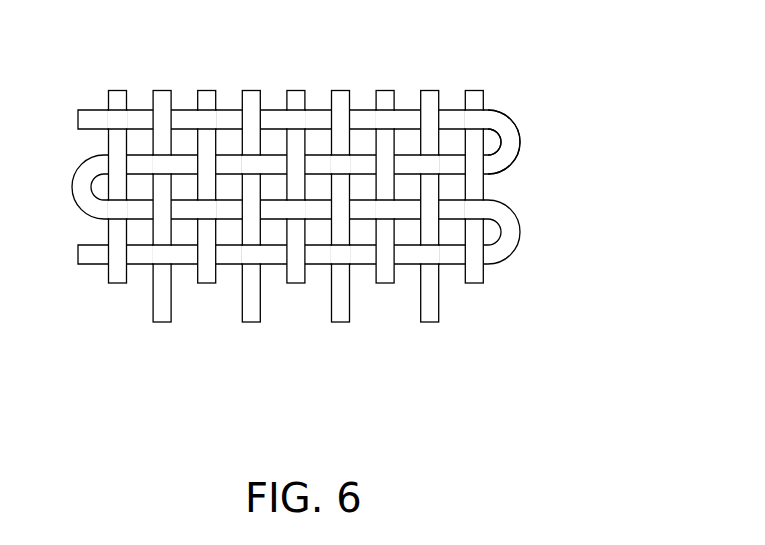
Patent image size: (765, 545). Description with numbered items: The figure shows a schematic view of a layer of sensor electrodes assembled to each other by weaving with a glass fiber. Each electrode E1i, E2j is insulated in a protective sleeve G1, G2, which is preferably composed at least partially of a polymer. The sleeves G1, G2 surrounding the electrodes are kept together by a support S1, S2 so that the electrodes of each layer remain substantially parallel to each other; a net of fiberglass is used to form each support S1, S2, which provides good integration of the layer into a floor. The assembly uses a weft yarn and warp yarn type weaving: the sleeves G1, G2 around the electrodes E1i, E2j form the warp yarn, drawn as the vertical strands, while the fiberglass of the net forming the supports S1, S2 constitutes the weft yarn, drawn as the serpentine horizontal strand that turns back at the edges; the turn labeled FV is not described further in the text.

The fold (turn) of weft strand FV is at (512, 120).
The protective sleeve G1 is at (106, 237).
The protective sleeve G2 is at (144, 305).
The electrode E1i is at (250, 272).
The electrode E2j is at (252, 357).
The support S1 is at (354, 239).
The support S2 is at (541, 288).